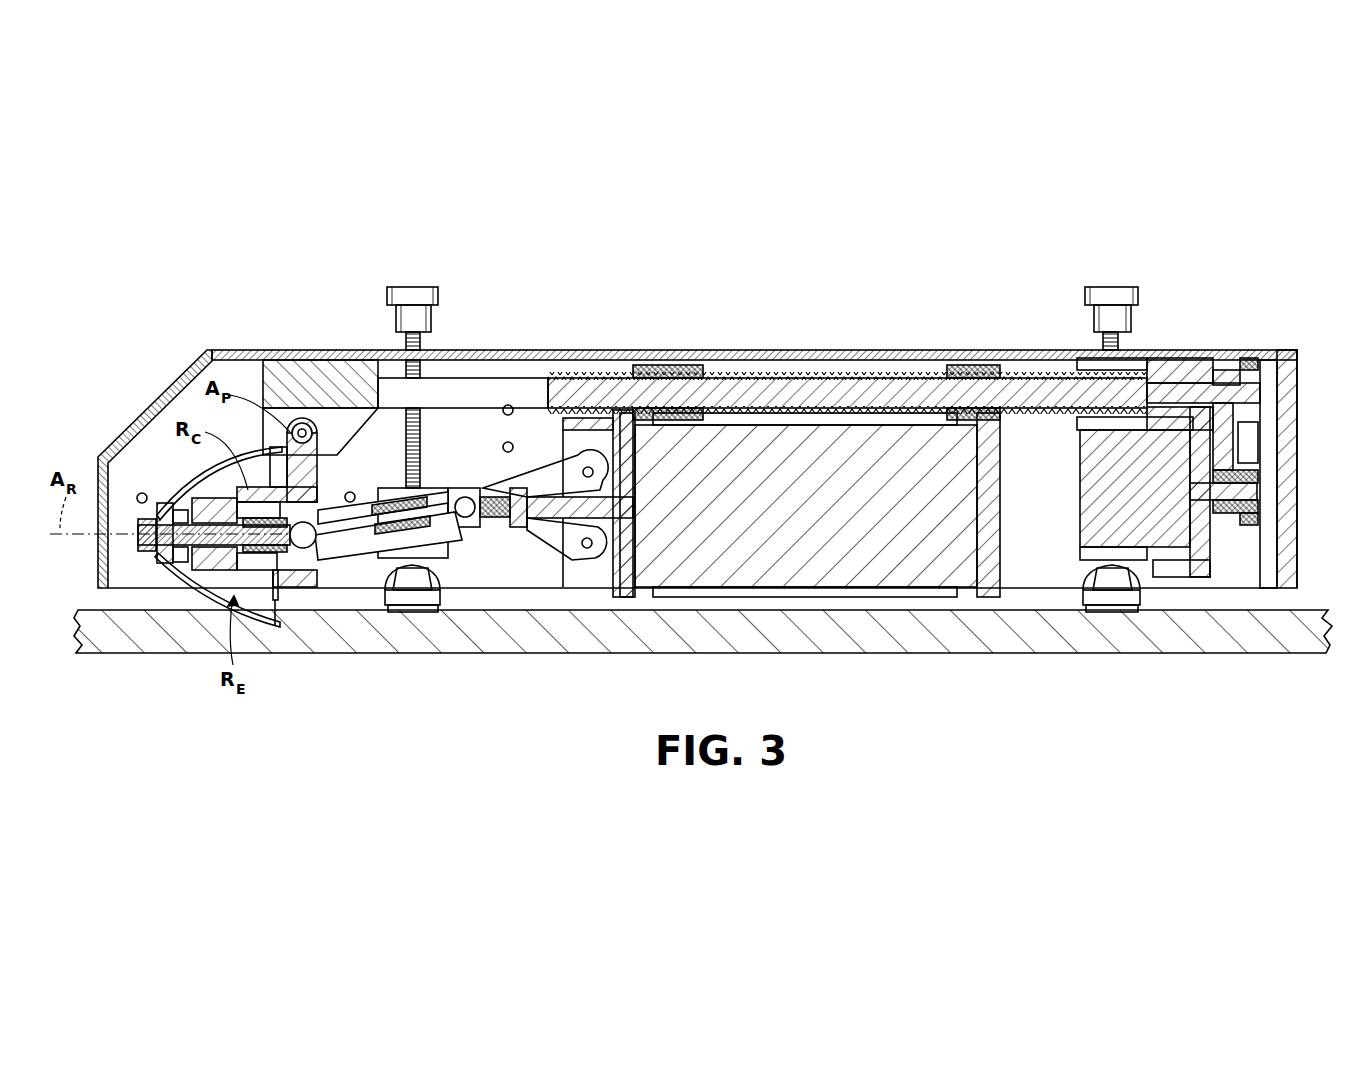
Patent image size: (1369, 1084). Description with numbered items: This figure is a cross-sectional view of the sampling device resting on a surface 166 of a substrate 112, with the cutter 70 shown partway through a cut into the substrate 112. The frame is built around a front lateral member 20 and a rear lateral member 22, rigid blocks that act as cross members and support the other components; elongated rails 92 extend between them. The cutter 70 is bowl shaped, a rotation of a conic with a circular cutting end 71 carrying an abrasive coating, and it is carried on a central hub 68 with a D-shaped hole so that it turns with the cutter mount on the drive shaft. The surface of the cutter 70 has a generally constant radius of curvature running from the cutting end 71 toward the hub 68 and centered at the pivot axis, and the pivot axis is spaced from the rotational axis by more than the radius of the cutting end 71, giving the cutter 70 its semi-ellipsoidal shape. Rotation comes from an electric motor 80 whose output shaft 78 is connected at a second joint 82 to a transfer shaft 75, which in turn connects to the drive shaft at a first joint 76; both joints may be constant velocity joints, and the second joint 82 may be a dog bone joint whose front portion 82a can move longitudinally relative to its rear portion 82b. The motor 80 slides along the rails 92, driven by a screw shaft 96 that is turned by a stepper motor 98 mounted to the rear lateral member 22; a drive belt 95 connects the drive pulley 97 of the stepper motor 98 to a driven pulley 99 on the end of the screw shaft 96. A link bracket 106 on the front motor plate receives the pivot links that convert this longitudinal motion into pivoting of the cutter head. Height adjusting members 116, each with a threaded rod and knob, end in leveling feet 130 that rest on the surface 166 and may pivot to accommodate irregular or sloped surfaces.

The front lateral member 20 is at (330, 372).
The rear lateral member 22 is at (1183, 372).
The central hub 68 is at (150, 565).
The cutter 70 is at (188, 594).
The cutting end 71 is at (276, 605).
The transfer shaft 75 is at (365, 503).
The first joint 76 is at (306, 552).
The output shaft 78 is at (545, 512).
The electric motor 80 is at (808, 578).
The second joint 82 is at (466, 546).
The front portion of the second joint 82a is at (462, 497).
The rear portion of the second joint 82b is at (497, 498).
The rails 92 is at (487, 388).
The drive belt 95 is at (1250, 437).
The screw shaft 96 is at (818, 388).
The drive pulley 97 is at (1262, 508).
The stepper motor 98 is at (1100, 495).
The driven pulley 99 is at (1262, 375).
The link bracket 106 is at (343, 555).
The substrate 112 is at (1252, 660).
The height adjusting members 116 is at (446, 322).
The leveling foot 130 is at (412, 622).
The surface 166 is at (1310, 610).